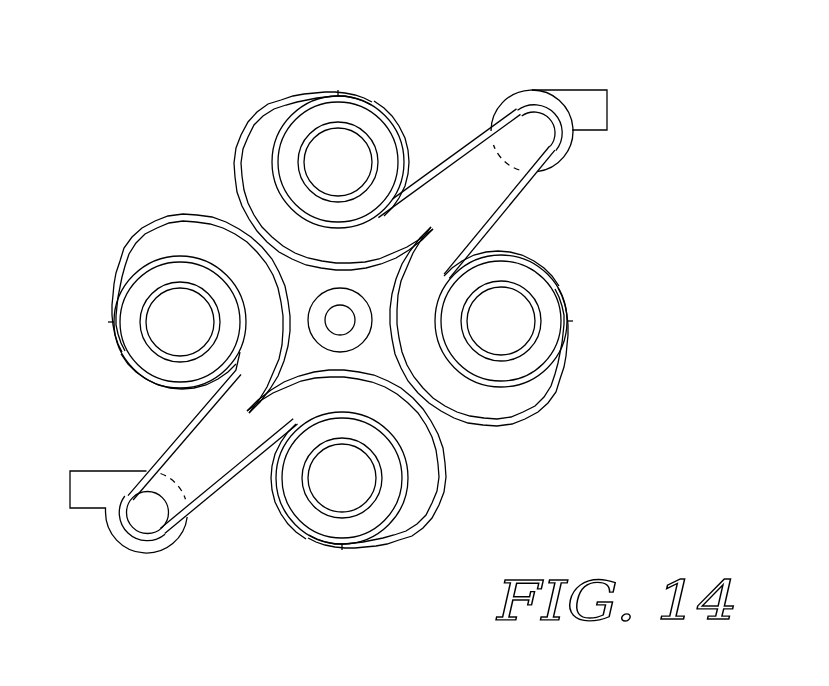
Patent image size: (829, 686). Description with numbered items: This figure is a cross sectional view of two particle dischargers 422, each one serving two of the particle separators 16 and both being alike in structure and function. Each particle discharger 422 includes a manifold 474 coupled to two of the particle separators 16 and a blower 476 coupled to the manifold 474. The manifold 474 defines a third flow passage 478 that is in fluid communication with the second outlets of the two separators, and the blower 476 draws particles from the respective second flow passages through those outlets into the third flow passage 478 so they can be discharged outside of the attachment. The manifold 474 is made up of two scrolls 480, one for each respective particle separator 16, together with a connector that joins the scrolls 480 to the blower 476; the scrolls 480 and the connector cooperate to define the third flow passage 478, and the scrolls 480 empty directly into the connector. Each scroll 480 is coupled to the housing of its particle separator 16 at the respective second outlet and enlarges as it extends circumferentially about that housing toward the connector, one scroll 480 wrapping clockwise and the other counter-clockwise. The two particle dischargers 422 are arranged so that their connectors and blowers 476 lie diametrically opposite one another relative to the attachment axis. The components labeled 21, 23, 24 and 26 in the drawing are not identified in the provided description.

The particle separator 16 is at (266, 138).
The central hub 21 is at (336, 290).
The hub bore 23 is at (352, 355).
The bearing outer race 24 is at (273, 173).
The bearing inner race 26 is at (313, 140).
The particle discharger 422 is at (613, 241).
The manifold 474 is at (438, 160).
The blower 476 is at (590, 83).
The third flow passage 478 is at (478, 204).
The scroll 480 is at (265, 107).